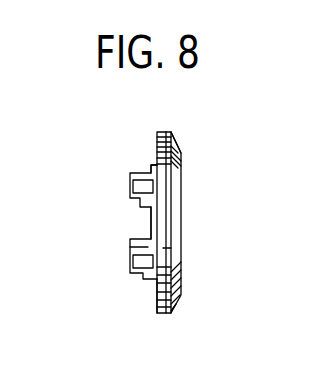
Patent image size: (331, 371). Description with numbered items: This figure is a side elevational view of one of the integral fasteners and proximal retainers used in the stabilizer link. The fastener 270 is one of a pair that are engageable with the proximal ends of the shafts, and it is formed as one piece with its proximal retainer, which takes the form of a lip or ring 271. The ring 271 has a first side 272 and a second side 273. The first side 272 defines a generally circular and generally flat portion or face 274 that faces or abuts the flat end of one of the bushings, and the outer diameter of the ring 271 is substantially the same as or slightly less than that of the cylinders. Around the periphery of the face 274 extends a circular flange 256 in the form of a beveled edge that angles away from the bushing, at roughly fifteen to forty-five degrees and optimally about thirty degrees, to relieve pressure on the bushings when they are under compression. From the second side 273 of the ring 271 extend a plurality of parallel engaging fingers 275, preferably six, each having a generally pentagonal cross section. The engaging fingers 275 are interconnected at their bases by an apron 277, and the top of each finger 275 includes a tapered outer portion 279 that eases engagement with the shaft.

The fastener 270 is at (143, 279).
The ring 271 is at (165, 131).
The first side 272 is at (183, 290).
The second side 273 is at (155, 287).
The face 274 is at (177, 195).
The engaging finger 275 is at (130, 193).
The apron 277 is at (153, 170).
The tapered outer portion 279 is at (128, 242).
The circular flange 256 is at (181, 146).